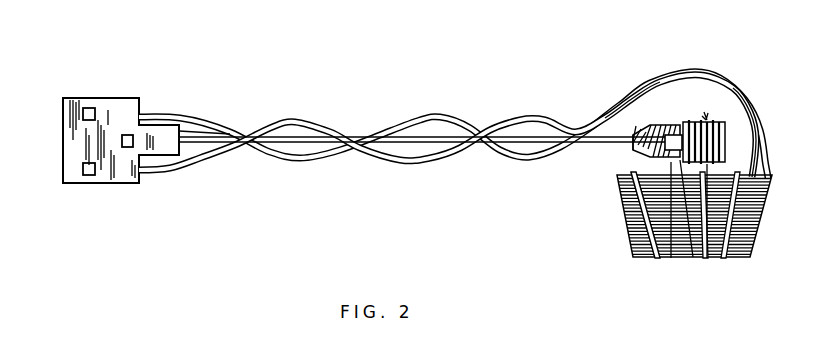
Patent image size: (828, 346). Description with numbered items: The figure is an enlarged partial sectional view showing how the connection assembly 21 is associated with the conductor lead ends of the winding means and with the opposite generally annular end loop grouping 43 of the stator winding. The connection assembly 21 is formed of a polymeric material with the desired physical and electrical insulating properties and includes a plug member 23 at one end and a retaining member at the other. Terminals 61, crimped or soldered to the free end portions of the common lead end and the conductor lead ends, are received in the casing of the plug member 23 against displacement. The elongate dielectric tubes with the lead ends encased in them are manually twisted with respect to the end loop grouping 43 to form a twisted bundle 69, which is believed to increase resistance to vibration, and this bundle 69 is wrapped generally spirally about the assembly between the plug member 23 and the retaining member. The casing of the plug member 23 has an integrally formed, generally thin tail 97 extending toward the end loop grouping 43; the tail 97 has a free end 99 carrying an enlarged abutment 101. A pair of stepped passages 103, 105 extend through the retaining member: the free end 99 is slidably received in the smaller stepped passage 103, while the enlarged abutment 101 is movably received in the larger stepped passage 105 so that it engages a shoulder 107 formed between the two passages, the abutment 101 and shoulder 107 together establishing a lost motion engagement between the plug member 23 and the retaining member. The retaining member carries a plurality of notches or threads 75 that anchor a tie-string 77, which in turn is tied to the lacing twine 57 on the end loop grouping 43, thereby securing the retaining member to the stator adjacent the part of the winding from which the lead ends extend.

The connection assembly 21 is at (410, 133).
The plug member 23 is at (116, 133).
The terminals 61 is at (102, 105).
The twisted bundle 69 is at (318, 163).
The tail 97 is at (340, 137).
The enlarged abutment 101 is at (640, 105).
The smaller stepped passage 103 is at (652, 164).
The larger stepped passage 105 is at (668, 123).
The tie-string 77 is at (706, 118).
The notches or threads 75 is at (722, 142).
The opposite end loop grouping 43 is at (683, 233).
The shoulder 107 is at (670, 259).
The free end 99 is at (695, 223).
The lacing twine 57 is at (722, 260).